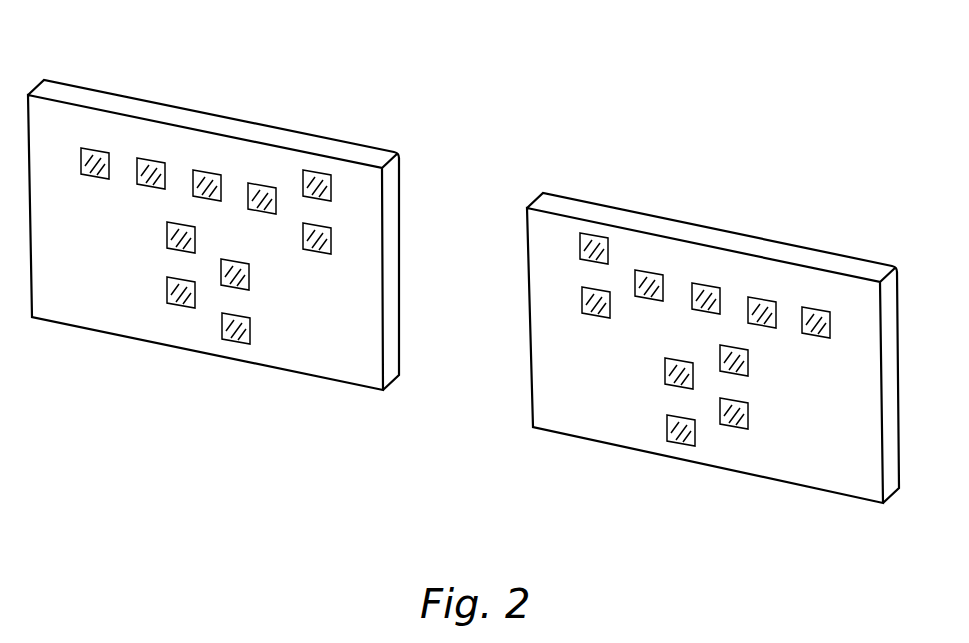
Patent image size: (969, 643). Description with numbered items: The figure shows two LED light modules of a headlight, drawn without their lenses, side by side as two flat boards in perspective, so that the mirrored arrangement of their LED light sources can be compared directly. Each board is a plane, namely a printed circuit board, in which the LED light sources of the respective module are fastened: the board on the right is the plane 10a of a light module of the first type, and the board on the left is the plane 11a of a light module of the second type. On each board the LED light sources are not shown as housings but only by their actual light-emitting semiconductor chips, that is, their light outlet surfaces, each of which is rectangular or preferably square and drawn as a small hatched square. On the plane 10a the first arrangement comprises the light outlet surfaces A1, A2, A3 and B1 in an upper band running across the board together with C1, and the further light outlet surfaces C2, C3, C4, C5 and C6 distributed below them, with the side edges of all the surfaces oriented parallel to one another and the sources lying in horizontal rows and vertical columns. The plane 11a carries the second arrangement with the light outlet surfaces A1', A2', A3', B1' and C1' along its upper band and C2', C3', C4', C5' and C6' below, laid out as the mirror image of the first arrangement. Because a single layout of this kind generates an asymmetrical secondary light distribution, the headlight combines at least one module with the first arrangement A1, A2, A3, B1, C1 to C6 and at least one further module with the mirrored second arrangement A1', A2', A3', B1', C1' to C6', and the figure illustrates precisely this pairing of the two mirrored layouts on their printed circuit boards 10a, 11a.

The plane (printed circuit board) 10a is at (670, 222).
The plane (printed circuit board) 11a is at (212, 120).
The light outlet surface A1 is at (639, 232).
The light outlet surface A2 is at (785, 265).
The light outlet surface A3 is at (837, 273).
The light outlet surface B1 is at (734, 252).
The light outlet surface C1 is at (585, 203).
The light outlet surface C2 is at (576, 332).
The light outlet surface C3 is at (775, 389).
The light outlet surface C4 is at (640, 392).
The light outlet surface C5 is at (745, 459).
The light outlet surface C6 is at (658, 462).
The light outlet surface A1' is at (306, 149).
The light outlet surface A2' is at (166, 124).
The light outlet surface A3' is at (111, 106).
The light outlet surface B1' is at (252, 139).
The light outlet surface C1' is at (354, 151).
The light outlet surface C2' is at (383, 261).
The light outlet surface C3' is at (149, 257).
The light outlet surface C4' is at (287, 303).
The light outlet surface C5' is at (171, 338).
The light outlet surface C6' is at (260, 360).